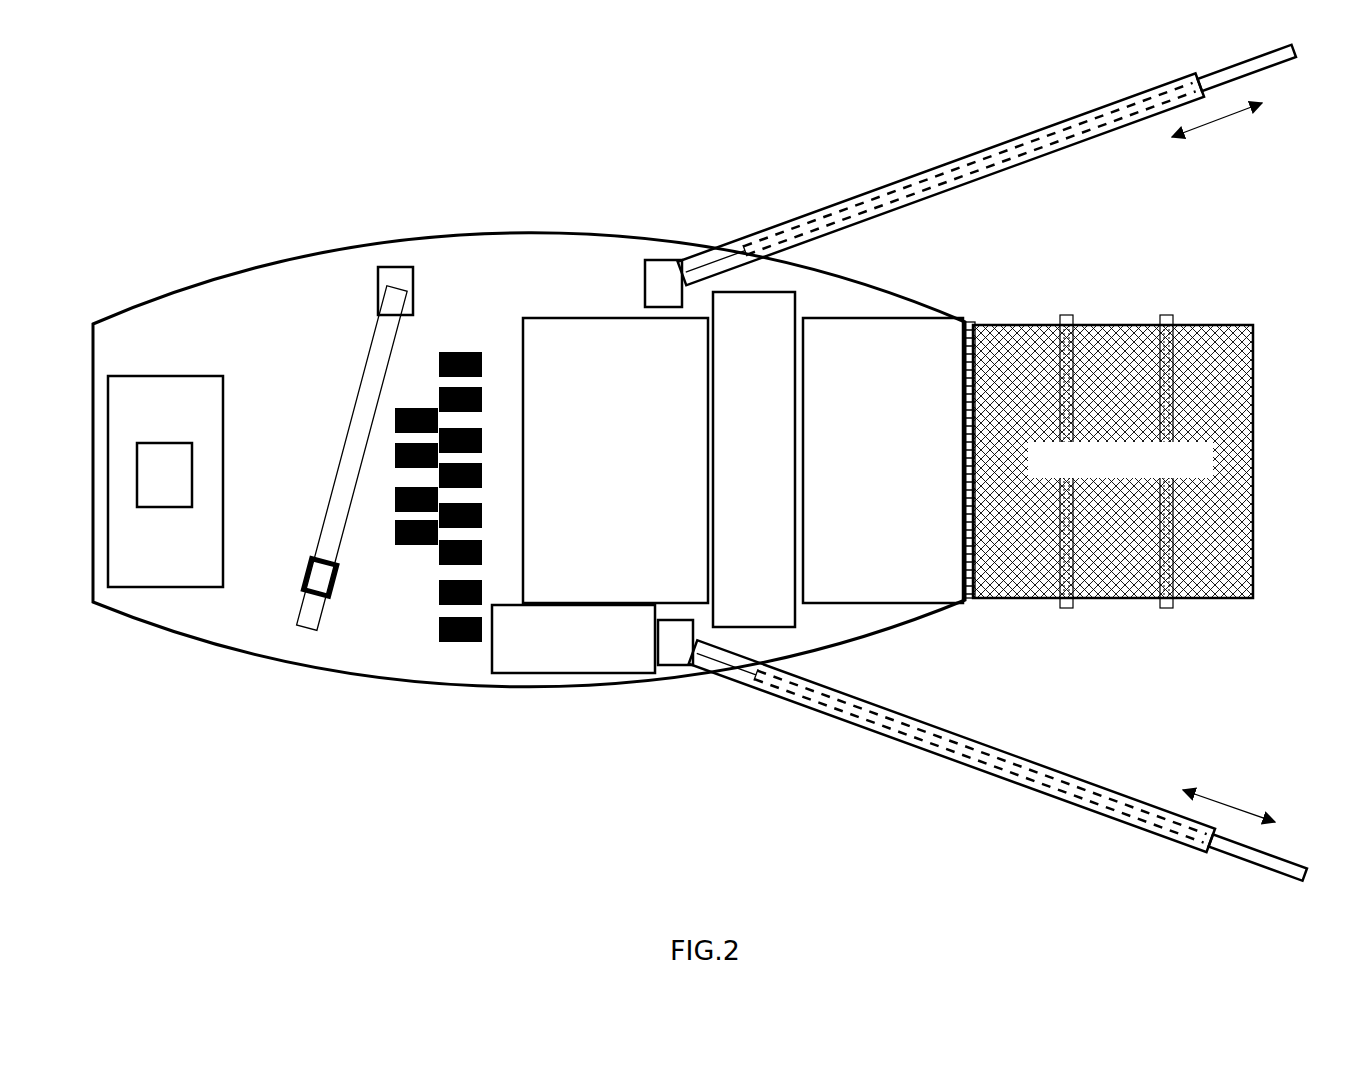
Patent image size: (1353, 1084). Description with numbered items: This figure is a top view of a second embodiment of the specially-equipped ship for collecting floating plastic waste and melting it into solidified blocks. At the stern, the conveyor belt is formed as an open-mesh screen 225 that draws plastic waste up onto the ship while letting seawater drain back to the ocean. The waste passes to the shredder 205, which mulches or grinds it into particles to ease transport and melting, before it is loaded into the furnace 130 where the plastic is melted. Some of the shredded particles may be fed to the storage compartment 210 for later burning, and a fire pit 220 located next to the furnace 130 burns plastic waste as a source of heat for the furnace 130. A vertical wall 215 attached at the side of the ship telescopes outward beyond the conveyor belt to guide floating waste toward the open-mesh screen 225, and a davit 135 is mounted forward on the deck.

The furnace 130 is at (603, 384).
The davit 135 is at (330, 390).
The shredder 205 is at (976, 422).
The storage compartment 210 is at (523, 699).
The vertical wall 215 is at (708, 260).
The fire pit 220 is at (902, 491).
The open-mesh screen 225 is at (1213, 370).